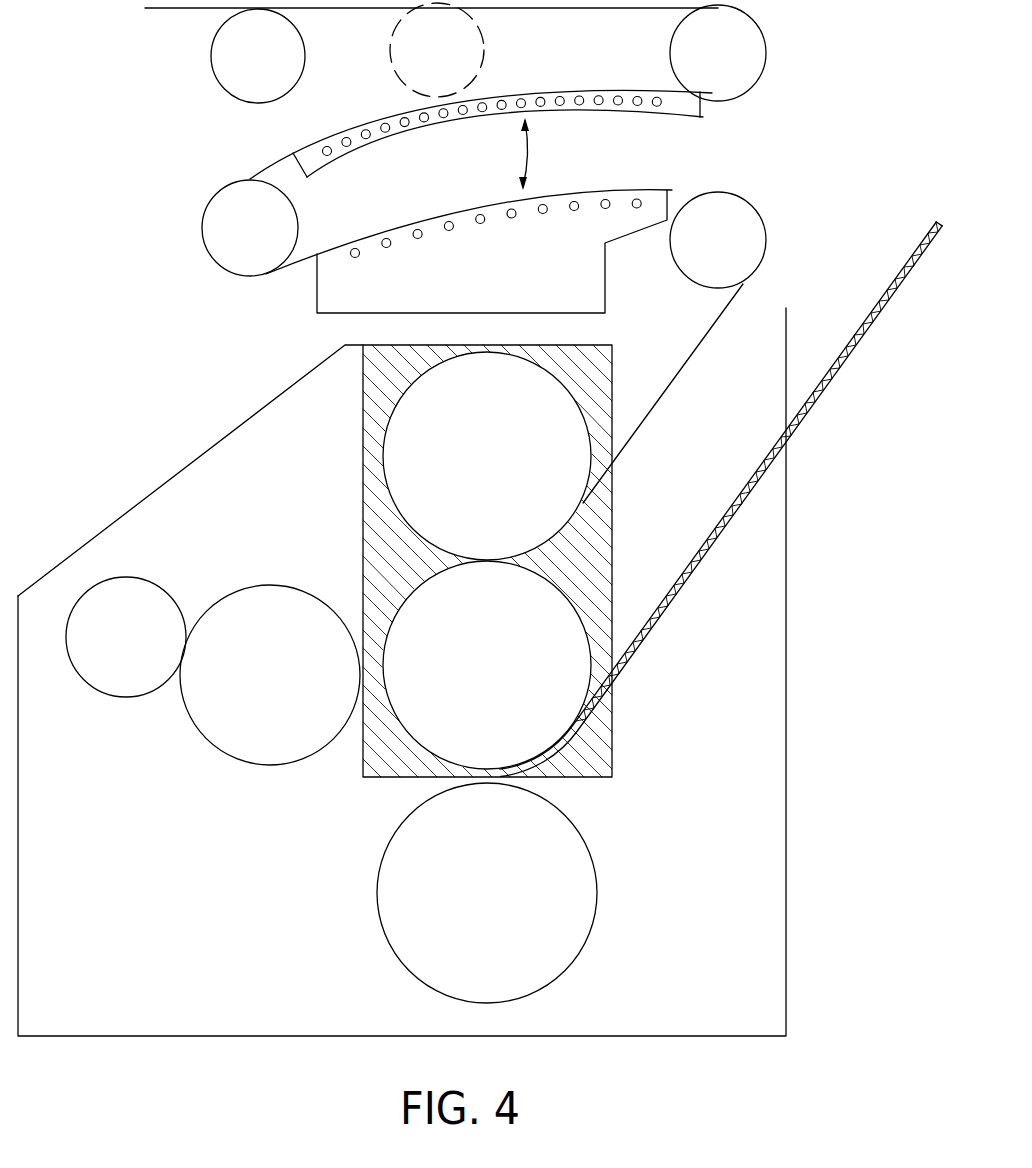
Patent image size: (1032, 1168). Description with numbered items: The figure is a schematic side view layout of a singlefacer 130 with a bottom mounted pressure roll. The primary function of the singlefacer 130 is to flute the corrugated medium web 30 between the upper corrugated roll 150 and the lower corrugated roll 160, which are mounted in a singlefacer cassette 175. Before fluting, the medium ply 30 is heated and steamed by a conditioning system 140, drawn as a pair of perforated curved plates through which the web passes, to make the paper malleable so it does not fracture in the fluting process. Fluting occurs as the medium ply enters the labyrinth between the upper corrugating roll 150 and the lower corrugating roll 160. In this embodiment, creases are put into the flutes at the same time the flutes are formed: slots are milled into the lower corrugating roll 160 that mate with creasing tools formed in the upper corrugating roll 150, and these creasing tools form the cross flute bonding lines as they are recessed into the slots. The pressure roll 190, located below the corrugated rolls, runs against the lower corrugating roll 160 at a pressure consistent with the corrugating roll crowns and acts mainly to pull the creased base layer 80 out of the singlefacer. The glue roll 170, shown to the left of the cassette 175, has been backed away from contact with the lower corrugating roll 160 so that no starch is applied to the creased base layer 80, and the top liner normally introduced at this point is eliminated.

The corrugated medium web 30 is at (704, 337).
The creased base layer 80 is at (735, 488).
The singlefacer 130 is at (248, 823).
The conditioning system 140 is at (530, 152).
The upper corrugated roll 150 is at (483, 445).
The lower corrugated roll 160 is at (542, 683).
The glue roll 170 is at (268, 647).
The singlefacer cassette 175 is at (362, 525).
The pressure roll 190 is at (577, 928).